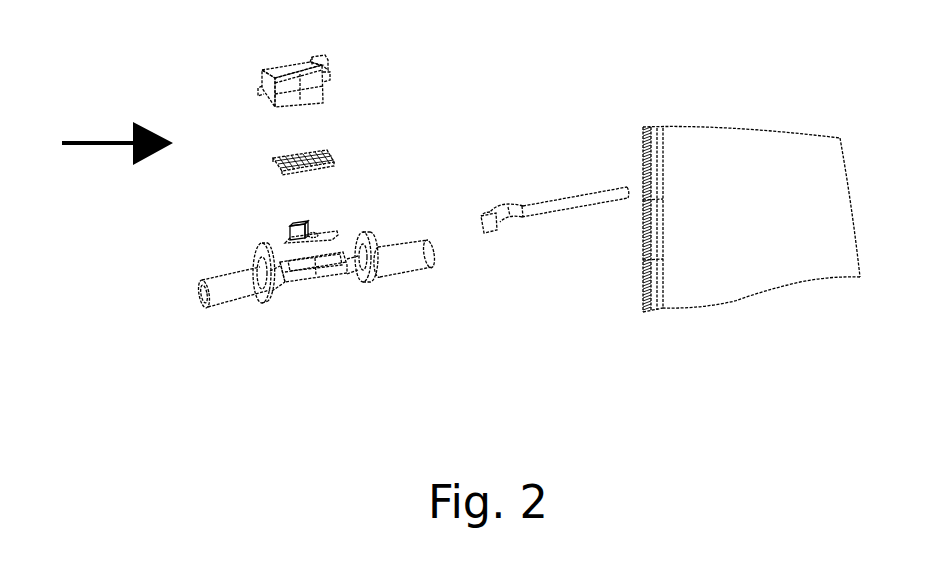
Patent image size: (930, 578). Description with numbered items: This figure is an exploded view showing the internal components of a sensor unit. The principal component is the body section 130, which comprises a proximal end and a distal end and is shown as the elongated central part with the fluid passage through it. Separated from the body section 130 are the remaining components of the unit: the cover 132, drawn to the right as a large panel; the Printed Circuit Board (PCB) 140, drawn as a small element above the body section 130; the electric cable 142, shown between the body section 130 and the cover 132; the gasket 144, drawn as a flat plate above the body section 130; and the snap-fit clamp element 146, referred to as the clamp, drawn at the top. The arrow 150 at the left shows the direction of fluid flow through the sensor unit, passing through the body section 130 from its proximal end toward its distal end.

The body section 130 is at (322, 285).
The cover 132 is at (725, 128).
The Printed Circuit Board (PCB) 140 is at (327, 232).
The electric cable 142 is at (578, 198).
The gasket 144 is at (332, 152).
The snap-fit clamp element 146 is at (292, 68).
The arrow 150 is at (109, 132).